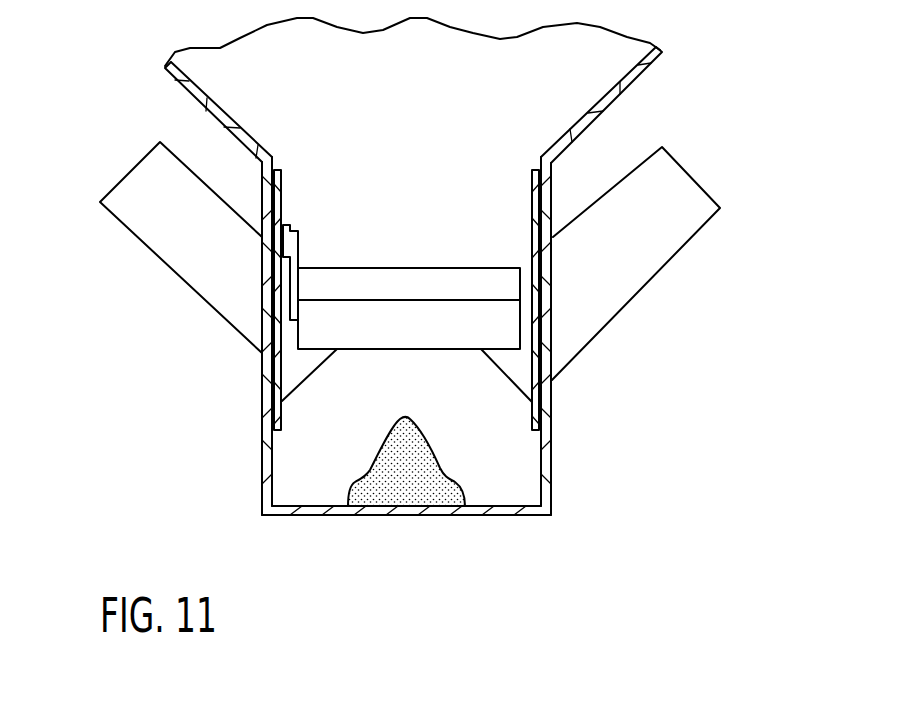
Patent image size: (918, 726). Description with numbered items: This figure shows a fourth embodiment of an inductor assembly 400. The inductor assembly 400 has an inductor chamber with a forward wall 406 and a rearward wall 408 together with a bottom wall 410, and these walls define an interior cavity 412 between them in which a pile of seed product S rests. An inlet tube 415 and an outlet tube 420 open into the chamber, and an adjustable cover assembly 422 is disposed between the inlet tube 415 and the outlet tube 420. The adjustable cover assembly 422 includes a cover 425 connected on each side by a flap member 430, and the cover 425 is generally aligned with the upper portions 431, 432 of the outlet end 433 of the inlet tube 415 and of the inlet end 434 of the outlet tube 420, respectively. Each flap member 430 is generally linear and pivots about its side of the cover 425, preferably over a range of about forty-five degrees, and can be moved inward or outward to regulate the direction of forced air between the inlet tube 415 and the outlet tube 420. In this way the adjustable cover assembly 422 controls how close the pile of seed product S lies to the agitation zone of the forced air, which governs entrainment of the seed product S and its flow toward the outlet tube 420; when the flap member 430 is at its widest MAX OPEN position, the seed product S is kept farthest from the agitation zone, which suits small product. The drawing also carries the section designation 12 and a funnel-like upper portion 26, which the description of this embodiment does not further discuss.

The section line 12- 12 is at (298, 143).
The funnel 26 is at (645, 77).
The inductor assembly 400 is at (463, 358).
The forward wall 406 is at (262, 473).
The rearward wall 408 is at (551, 472).
The bottom wall 410 is at (407, 514).
The interior cavity 412 is at (485, 443).
The inlet tube 415 is at (178, 285).
The outlet tube 420 is at (632, 320).
The adjustable cover assembly 422 is at (409, 287).
The cover 425 is at (362, 284).
The flap member 430 is at (387, 333).
The upper portion of outlet end of inlet tube 431 is at (282, 260).
The upper portion of inlet end of outlet tube 432 is at (530, 266).
The outlet end of inlet tube 433 is at (318, 372).
The inlet end of outlet tube 434 is at (503, 376).
The seed product S is at (398, 480).